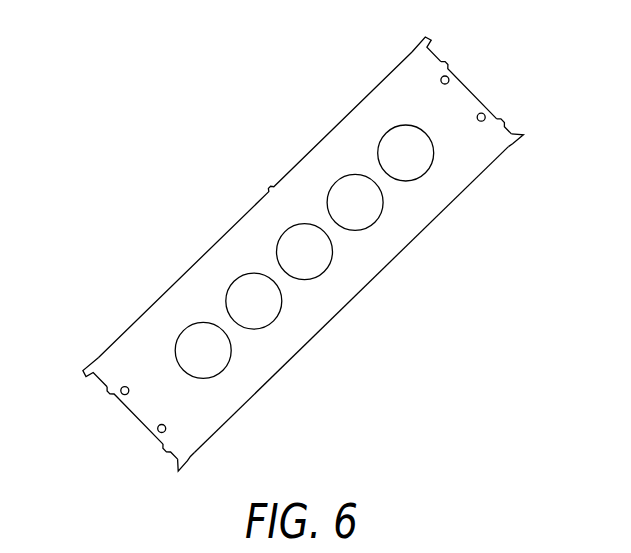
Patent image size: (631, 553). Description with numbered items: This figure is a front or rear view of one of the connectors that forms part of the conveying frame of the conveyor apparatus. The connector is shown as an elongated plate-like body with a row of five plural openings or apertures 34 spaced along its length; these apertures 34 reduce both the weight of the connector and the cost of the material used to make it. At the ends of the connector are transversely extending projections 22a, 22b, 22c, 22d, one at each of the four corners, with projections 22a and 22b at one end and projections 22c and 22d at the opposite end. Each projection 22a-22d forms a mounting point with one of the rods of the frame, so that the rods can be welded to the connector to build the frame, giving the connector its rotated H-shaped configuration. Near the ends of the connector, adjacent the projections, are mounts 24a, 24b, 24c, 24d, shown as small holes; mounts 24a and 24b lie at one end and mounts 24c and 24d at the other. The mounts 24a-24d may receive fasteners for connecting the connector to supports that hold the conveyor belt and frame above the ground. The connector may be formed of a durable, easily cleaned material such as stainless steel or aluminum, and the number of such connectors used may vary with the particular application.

The transversely extending projection 22a is at (81, 369).
The transversely extending projection 22b is at (189, 466).
The transversely extending projection 22c is at (420, 43).
The transversely extending projection 22d is at (527, 136).
The mount 24a is at (122, 395).
The mount 24b is at (160, 433).
The mount 24c is at (448, 76).
The mount 24d is at (485, 113).
The openings or apertures 34 is at (313, 288).